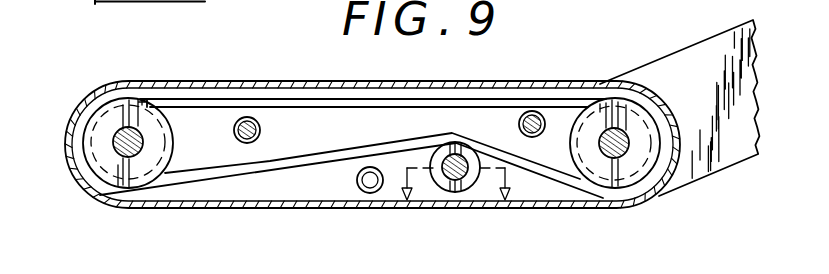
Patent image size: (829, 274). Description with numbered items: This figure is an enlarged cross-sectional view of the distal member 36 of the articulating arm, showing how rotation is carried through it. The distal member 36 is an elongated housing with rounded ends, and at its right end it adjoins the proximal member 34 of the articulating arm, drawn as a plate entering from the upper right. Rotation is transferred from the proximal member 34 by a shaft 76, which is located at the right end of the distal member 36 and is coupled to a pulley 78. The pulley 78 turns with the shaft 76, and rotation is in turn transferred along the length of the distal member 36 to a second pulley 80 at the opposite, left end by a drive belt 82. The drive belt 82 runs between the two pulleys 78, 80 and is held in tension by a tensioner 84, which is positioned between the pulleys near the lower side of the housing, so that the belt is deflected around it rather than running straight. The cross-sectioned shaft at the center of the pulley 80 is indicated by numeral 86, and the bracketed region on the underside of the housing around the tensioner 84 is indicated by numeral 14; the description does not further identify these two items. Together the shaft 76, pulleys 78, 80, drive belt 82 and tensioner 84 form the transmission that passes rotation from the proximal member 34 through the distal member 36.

The tape cartridge 14 is at (458, 203).
The proximal member 34 is at (717, 33).
The distal member 36 is at (273, 81).
The shaft 76 is at (629, 137).
The pulley 78 is at (619, 172).
The pulley 80 is at (110, 158).
The drive belt 82 is at (294, 160).
The tensioner 84 is at (460, 188).
The pulley shaft 86 is at (114, 137).